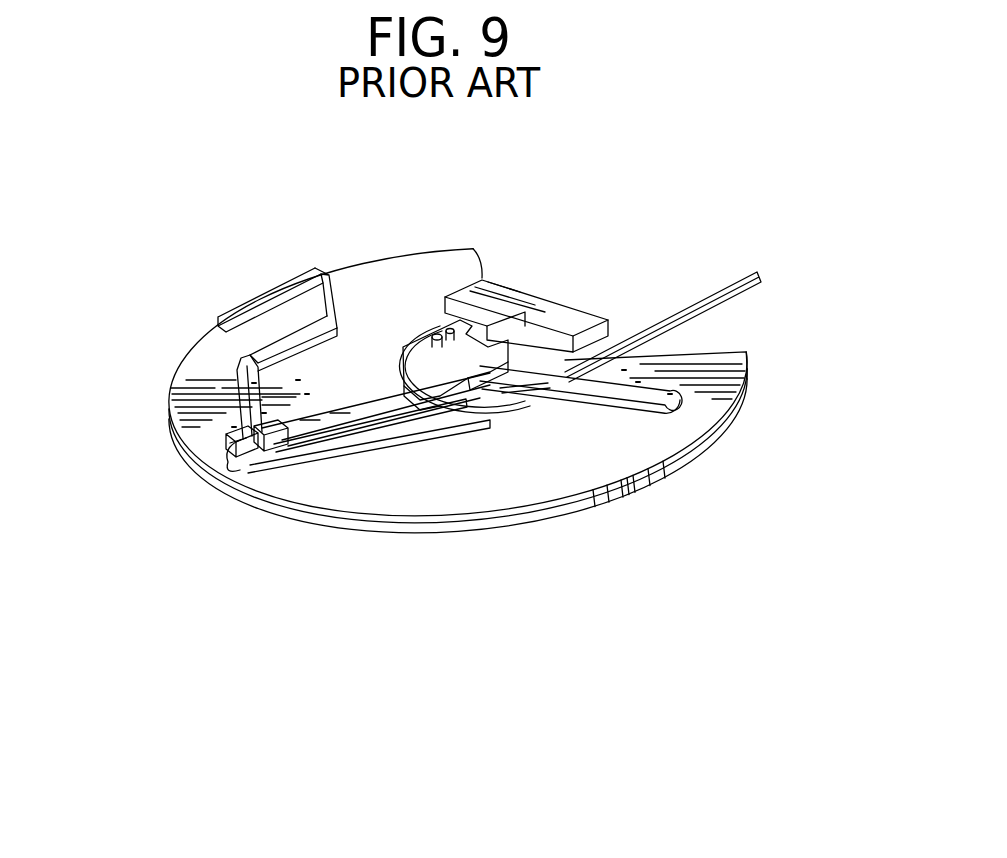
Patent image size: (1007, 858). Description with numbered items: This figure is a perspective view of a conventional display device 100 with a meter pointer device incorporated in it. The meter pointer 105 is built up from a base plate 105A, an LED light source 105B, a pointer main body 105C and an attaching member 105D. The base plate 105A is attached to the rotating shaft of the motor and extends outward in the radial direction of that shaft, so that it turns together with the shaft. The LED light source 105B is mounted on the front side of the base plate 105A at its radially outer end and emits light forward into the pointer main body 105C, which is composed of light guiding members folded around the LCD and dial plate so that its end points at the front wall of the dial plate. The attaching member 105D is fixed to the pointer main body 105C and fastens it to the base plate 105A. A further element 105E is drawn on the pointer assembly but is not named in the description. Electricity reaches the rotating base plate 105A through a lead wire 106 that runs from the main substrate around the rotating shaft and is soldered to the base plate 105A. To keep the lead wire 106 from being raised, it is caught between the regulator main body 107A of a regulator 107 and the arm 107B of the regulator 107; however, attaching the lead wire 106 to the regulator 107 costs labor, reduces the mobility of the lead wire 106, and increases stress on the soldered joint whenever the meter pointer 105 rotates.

The display device 100 is at (632, 198).
The meter pointer 105 is at (367, 446).
The base plate 105A is at (341, 415).
The LED light source 105B is at (226, 442).
The pointer main body 105C is at (222, 330).
The attaching member 105D is at (272, 422).
The weight block 105E is at (607, 318).
The lead wire 106 is at (703, 302).
The regulator 107 is at (718, 440).
The regulator main body 107A is at (618, 456).
The arm 107B is at (597, 390).